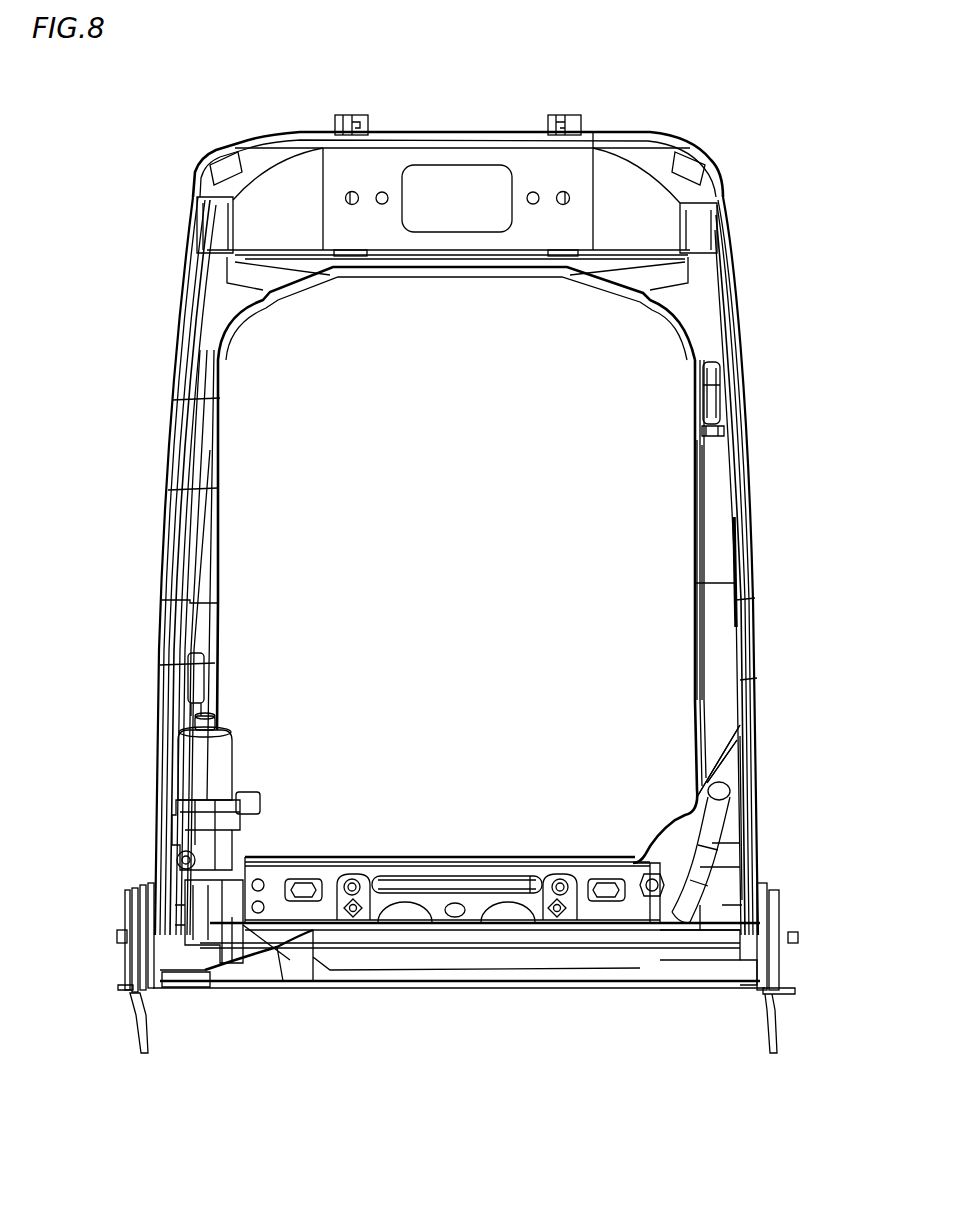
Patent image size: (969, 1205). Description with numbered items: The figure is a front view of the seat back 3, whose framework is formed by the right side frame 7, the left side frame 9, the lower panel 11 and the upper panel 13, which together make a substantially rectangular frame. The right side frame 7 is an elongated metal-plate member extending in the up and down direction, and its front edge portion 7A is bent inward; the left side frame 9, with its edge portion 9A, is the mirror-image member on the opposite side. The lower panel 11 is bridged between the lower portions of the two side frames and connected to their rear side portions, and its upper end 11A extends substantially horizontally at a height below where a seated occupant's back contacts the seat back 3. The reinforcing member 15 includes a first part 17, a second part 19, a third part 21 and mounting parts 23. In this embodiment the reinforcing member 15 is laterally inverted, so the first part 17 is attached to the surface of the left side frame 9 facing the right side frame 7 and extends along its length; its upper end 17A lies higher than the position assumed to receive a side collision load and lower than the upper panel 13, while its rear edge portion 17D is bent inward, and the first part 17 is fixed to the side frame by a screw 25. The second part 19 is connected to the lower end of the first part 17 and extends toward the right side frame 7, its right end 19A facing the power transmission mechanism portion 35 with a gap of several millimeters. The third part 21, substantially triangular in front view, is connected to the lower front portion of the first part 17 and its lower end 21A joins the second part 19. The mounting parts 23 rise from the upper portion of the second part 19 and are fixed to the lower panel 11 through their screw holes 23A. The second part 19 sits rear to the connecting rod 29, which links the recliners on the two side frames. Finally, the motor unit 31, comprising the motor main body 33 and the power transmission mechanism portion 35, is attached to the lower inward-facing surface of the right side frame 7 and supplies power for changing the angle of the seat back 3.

The seat back 3 is at (233, 150).
The right side frame 7 is at (165, 471).
The front edge portion 7A is at (182, 554).
The left side frame 9 is at (750, 491).
The right side frame flange 9A is at (745, 648).
The lower panel 11 is at (447, 870).
The upper end 11A is at (476, 876).
The upper panel 13 is at (398, 165).
The reinforcing member 15 is at (562, 575).
The first part 17 is at (715, 567).
The upper end 17A is at (711, 414).
The rear edge portion 17D is at (713, 505).
The second part 19 is at (593, 900).
The right end 19A is at (287, 928).
The third part 21 is at (717, 870).
The lower end 21A is at (686, 922).
The mounting part 23 is at (356, 872).
The screw hole 23A is at (343, 882).
The screw 25 is at (712, 438).
The connecting rod 29 is at (260, 937).
The motor unit 31 is at (316, 741).
The motor main body 33 is at (218, 737).
The power transmission mechanism portion 35 is at (238, 862).